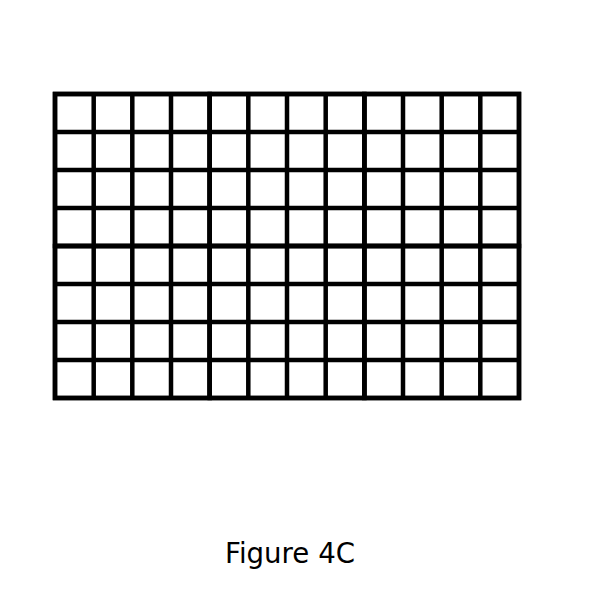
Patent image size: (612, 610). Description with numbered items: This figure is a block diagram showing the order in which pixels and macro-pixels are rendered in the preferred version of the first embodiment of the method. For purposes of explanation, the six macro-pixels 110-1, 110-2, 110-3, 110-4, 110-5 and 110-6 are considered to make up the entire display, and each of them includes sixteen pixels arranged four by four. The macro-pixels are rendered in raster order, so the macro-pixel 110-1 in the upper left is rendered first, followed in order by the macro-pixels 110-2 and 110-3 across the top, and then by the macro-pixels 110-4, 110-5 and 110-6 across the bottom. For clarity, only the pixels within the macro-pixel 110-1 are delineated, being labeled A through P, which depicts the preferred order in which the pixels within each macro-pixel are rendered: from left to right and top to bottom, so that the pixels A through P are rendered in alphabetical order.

The macro-pixel 110-1 is at (210, 75).
The macro-pixel 110-2 is at (365, 75).
The macro-pixel 110-3 is at (518, 75).
The macro-pixel 110-4 is at (53, 417).
The macro-pixel 110-5 is at (210, 417).
The macro-pixel 110-6 is at (365, 417).